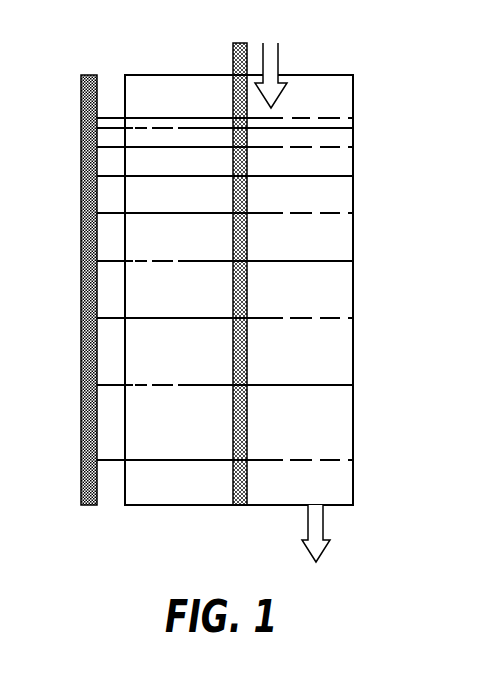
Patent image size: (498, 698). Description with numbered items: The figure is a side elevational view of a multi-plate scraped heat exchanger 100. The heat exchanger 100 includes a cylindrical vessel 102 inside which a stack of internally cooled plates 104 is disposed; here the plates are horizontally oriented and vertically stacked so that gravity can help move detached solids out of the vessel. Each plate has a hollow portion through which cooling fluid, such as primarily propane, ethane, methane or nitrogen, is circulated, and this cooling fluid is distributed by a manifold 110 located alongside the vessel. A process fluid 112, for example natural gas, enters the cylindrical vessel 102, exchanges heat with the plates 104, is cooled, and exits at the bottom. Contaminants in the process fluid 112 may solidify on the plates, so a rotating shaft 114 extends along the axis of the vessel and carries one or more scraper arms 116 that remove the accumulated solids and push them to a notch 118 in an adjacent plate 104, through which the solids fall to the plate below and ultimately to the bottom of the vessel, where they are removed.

The multi-plate scraped heat exchanger 100 is at (122, 551).
The cylindrical vessel 102 is at (353, 240).
The internally cooled plates 104 is at (155, 118).
The manifold 110 is at (81, 300).
The process fluid 112 is at (302, 38).
The rotating shaft 114 is at (233, 52).
The scraper arms 116 is at (330, 358).
The notch 118 is at (315, 118).